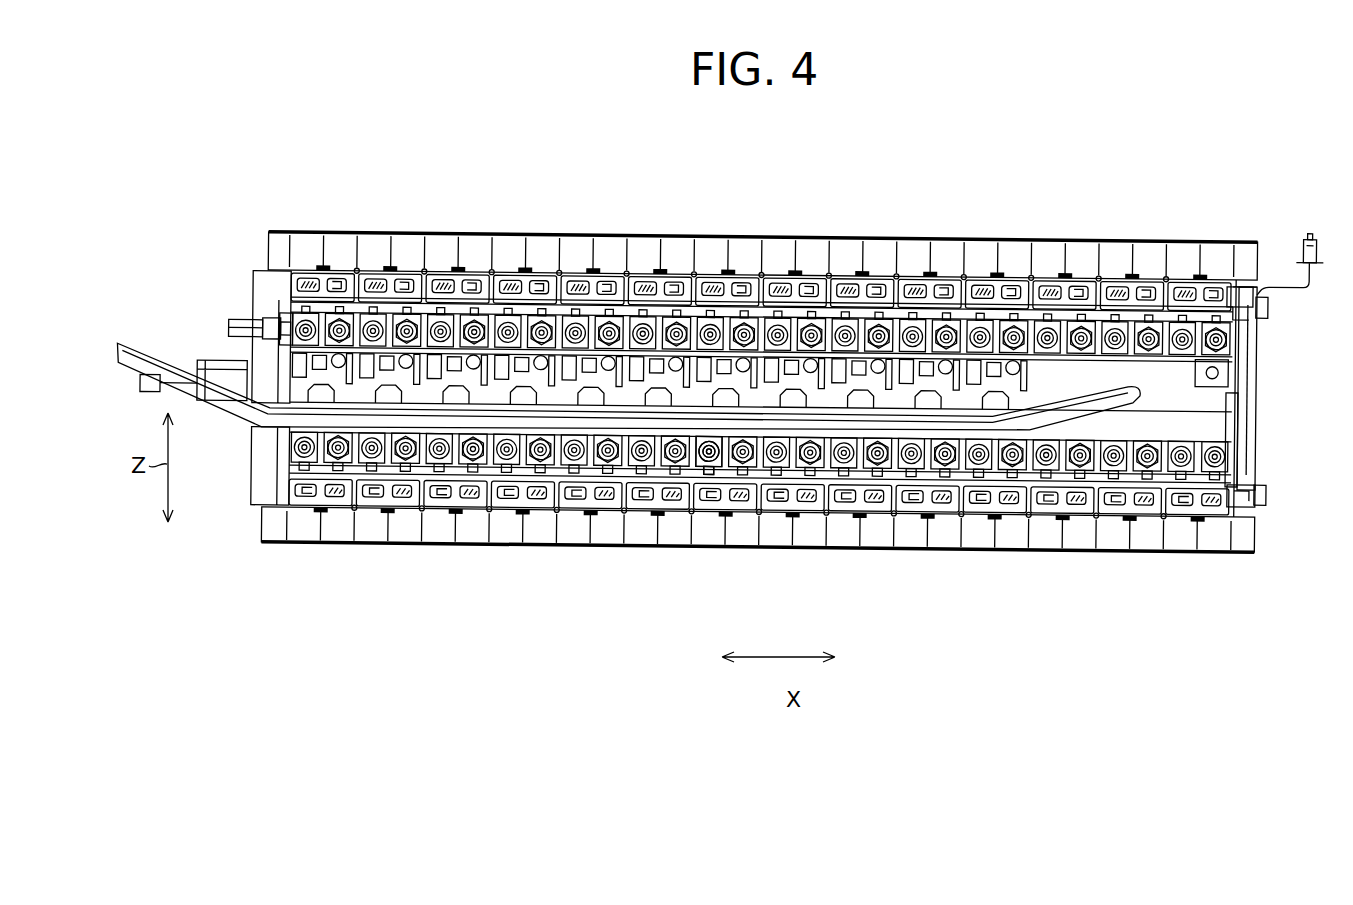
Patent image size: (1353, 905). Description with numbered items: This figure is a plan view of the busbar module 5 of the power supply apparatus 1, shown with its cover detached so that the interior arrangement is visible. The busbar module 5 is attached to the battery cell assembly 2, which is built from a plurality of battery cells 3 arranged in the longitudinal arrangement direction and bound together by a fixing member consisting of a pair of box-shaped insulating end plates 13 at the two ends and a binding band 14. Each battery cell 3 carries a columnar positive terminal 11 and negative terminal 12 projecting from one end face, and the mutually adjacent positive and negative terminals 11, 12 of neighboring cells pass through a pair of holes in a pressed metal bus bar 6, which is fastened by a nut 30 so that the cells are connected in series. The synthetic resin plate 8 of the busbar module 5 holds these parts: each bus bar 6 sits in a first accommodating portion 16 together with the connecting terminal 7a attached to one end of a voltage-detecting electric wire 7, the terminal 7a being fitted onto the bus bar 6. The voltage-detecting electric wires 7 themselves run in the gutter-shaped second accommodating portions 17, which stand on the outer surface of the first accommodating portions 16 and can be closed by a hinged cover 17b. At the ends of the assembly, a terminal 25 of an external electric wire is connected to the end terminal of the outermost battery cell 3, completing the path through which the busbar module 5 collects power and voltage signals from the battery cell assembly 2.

The power supply apparatus 1 is at (846, 189).
The battery cell assembly 2 is at (1102, 234).
The battery cell 3 is at (1078, 240).
The busbar module 5 is at (1273, 416).
The bus bar 6 is at (953, 298).
The voltage-detecting electric wire 7 is at (707, 298).
The connecting terminal 7a is at (826, 298).
The plate 8 is at (1267, 442).
The positive electrode 11 is at (1230, 340).
The negative electrode 12 is at (326, 318).
The end plate 13 is at (272, 530).
The binding band 14 is at (1264, 308).
The first accommodating portion 16 is at (378, 300).
The second accommodating portion 17 is at (635, 276).
The cover 17b is at (449, 286).
The terminal 25 is at (287, 320).
The nut 30 is at (585, 502).